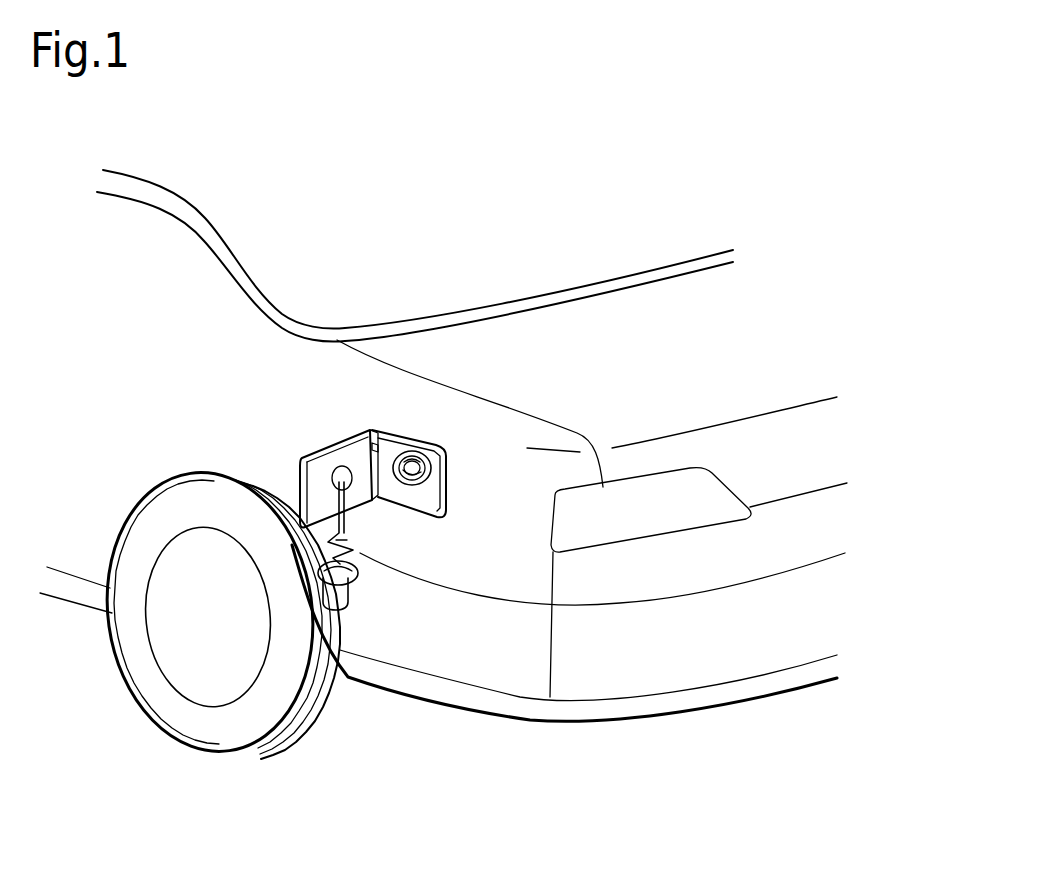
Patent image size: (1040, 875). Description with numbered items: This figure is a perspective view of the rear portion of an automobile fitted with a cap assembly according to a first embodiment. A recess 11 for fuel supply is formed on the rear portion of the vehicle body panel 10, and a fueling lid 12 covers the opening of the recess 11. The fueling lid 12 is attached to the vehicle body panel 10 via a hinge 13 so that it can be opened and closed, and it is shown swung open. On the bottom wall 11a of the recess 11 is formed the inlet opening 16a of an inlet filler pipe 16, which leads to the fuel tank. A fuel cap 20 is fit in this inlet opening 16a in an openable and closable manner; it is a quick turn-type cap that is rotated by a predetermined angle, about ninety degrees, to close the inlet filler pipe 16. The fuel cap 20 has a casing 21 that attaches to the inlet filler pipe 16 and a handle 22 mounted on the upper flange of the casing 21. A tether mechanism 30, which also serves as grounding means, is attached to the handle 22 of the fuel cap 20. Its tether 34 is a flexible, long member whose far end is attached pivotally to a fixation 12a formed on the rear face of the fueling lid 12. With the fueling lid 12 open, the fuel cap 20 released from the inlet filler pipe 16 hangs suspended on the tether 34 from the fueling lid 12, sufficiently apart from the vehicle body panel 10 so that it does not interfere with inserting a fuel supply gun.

The vehicle body panel 10 is at (357, 375).
The recess 11 is at (395, 442).
The bottom wall 11a is at (440, 457).
The fueling lid 12 is at (328, 348).
The fixation 12a is at (330, 486).
The hinge 13 is at (385, 428).
The inlet filler pipe 16 is at (602, 679).
The inlet opening 16a is at (405, 530).
The fuel cap 20 is at (337, 675).
The casing 21 is at (323, 587).
The handle 22 is at (360, 545).
The tether mechanism 30 is at (328, 347).
The tether 34 is at (398, 513).